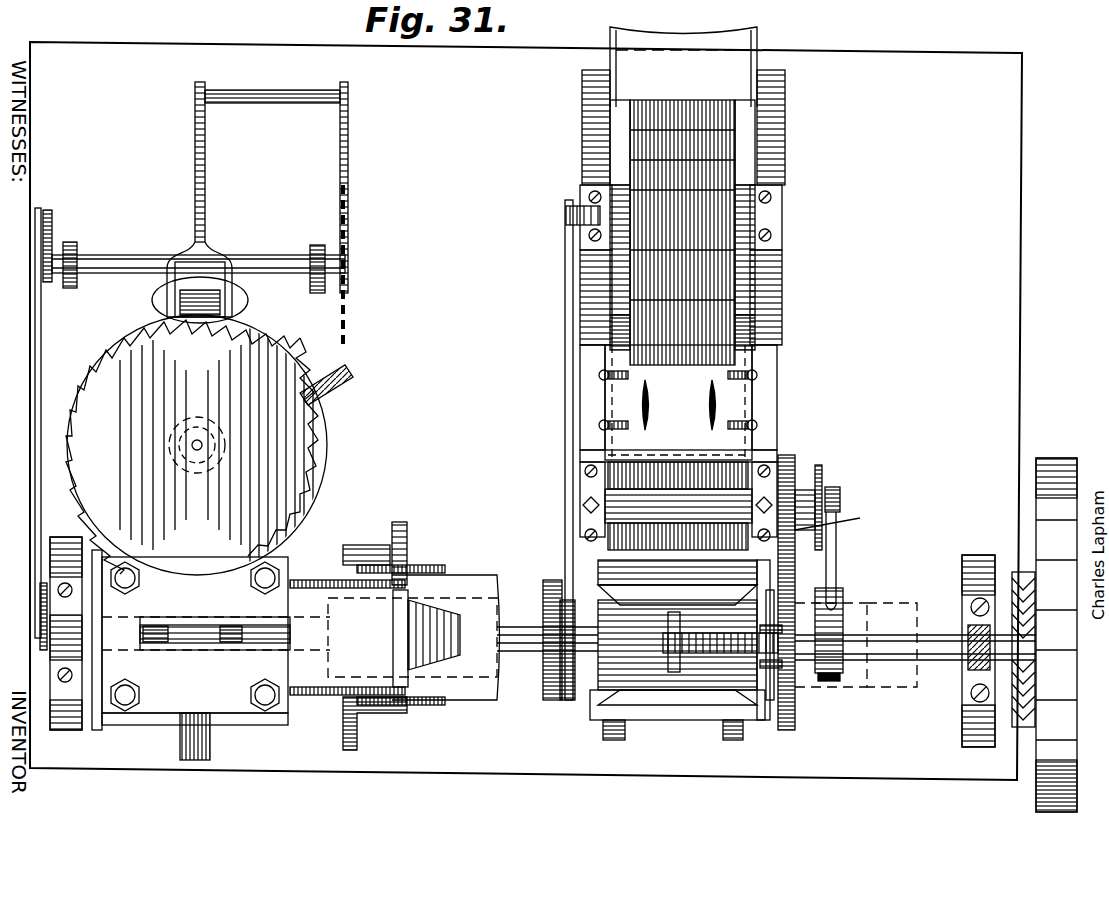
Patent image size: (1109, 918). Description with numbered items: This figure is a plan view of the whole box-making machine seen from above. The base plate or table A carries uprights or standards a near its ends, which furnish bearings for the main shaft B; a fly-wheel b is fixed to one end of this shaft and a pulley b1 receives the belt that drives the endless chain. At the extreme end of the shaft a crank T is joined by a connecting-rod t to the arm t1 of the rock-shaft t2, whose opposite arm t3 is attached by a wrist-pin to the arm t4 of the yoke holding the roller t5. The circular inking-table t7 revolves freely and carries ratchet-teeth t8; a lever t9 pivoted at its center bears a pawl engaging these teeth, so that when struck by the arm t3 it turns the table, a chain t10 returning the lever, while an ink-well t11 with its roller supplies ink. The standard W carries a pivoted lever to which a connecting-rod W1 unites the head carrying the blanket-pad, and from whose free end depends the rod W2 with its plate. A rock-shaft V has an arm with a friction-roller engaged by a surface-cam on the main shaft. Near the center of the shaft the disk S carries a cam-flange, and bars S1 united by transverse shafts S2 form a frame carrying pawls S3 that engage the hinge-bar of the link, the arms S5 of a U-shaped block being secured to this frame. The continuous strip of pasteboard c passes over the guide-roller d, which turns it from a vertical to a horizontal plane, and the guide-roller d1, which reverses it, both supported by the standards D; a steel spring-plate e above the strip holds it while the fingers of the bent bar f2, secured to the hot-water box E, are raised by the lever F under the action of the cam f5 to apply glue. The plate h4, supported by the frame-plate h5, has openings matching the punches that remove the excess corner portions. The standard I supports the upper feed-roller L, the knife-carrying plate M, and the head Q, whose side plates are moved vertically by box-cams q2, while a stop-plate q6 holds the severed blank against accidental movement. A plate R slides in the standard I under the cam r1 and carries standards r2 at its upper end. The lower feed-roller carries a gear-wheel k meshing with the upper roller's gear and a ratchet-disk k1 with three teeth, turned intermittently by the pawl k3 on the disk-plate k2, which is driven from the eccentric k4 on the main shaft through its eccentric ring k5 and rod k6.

The base plate or table A is at (1017, 392).
The main shaft B is at (920, 655).
The upright or standard a is at (962, 700).
The fly-wheel b is at (1056, 635).
The pulley b1 is at (1013, 580).
The connecting-rod t is at (41, 345).
The arm of rock-shaft t1 is at (52, 236).
The rock-shaft t2 is at (90, 273).
The arm of rock-shaft t3 is at (348, 158).
The arm of yoke t4 is at (200, 199).
The roller t5 is at (192, 300).
The circular inking-table t7 is at (312, 478).
The ratchet-teeth t8 is at (225, 445).
The lever t9 is at (340, 380).
The chain t10 is at (345, 298).
The ink-well t11 is at (248, 310).
The standard W is at (150, 618).
The connecting-rod W1 is at (195, 645).
The rod W2 is at (285, 627).
The crank T is at (64, 633).
The rock-shaft V is at (160, 730).
The disk S is at (357, 745).
The bars S1 is at (320, 580).
The transverse shafts S2 is at (425, 677).
The pawls S3 is at (450, 645).
The arms of U-shaped plate S5 is at (445, 569).
The cam f5 is at (543, 700).
The bent bar f2 is at (566, 216).
The lever F is at (565, 350).
The exterior box E is at (757, 60).
The standard D is at (583, 118).
The continuous strip of pasteboard c is at (630, 148).
The guide-roller d is at (750, 350).
The guide-roller d1 is at (693, 214).
The spring-plate e is at (772, 226).
The plate h4 is at (720, 380).
The frame-plate h5 is at (612, 395).
The upper feed-roller L is at (583, 505).
The plate M is at (600, 565).
The head Q is at (610, 670).
The box-cams q2 is at (603, 738).
The stop-plate q6 is at (690, 720).
The standard I is at (752, 720).
The plate R is at (795, 695).
The cam r1 is at (795, 728).
The standards r2 is at (775, 625).
The gear-wheel k is at (812, 458).
The ratchet-disk k1 is at (839, 521).
The disk-plate k2 is at (838, 470).
The pawl k3 is at (840, 498).
The eccentric k4 is at (843, 600).
The eccentric ring k5 is at (840, 681).
The rod k6 is at (836, 540).